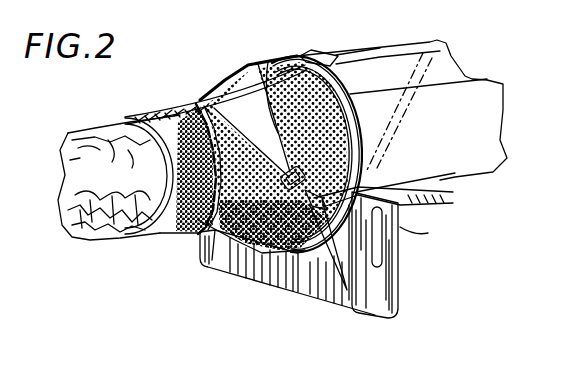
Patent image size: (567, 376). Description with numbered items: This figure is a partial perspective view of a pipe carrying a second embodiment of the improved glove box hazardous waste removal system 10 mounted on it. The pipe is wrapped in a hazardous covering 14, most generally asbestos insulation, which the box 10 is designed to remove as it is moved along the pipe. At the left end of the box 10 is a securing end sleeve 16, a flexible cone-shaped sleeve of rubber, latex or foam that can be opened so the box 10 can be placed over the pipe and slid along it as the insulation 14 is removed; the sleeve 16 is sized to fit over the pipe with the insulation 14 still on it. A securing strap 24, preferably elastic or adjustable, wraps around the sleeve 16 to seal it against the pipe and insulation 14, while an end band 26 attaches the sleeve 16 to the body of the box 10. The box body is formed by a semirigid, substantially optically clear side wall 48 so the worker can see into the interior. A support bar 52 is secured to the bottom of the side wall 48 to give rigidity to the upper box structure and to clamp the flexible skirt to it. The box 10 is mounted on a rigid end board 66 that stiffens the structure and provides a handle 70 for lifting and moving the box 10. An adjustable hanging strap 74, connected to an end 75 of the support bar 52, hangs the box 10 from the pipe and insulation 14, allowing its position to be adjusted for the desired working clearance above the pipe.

The glove box hazardous waste removal system 10 is at (443, 36).
The covering 14 is at (110, 178).
The securing end sleeve 16 is at (250, 189).
The securing strap 24 is at (187, 105).
The end band 26 is at (340, 74).
The side wall 48 is at (437, 124).
The support bar 52 is at (238, 272).
The end board 66 is at (383, 284).
The handle 70 is at (378, 250).
The adjustable hanging strap 74 is at (262, 56).
The end of the support bar 75 is at (297, 291).